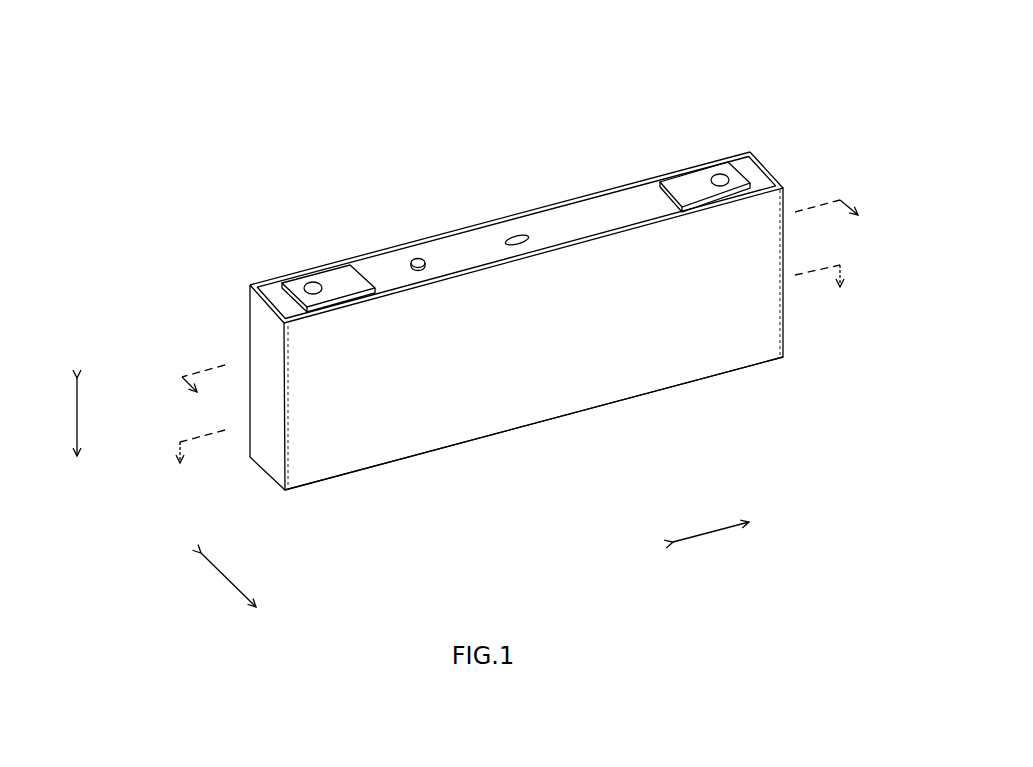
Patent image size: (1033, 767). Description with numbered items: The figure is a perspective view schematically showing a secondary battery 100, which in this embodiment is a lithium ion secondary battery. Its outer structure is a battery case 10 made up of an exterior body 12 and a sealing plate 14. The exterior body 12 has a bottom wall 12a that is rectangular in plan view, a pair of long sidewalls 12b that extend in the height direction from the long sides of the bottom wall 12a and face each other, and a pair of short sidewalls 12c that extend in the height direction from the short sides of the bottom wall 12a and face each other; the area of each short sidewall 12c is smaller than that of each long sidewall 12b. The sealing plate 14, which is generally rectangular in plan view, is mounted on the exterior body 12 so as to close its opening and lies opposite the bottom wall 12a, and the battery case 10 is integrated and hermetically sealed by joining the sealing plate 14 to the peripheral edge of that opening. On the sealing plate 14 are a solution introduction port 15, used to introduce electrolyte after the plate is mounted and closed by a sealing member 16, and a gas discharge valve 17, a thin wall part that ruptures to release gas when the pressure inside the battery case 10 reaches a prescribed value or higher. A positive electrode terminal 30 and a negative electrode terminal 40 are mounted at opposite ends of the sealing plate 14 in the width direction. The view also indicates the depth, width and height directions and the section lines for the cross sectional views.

The secondary battery 100 is at (699, 71).
The battery case 10 is at (575, 128).
The exterior body 12 is at (630, 262).
The bottom wall 12a is at (495, 435).
The long sidewall 12b is at (488, 221).
The short sidewall 12c is at (784, 333).
The sealing plate 14 is at (586, 217).
The solution introduction port 15 is at (431, 255).
The sealing member 16 is at (418, 258).
The gas discharge valve 17 is at (518, 234).
The positive electrode terminal 30 is at (311, 283).
The negative electrode terminal 40 is at (713, 172).